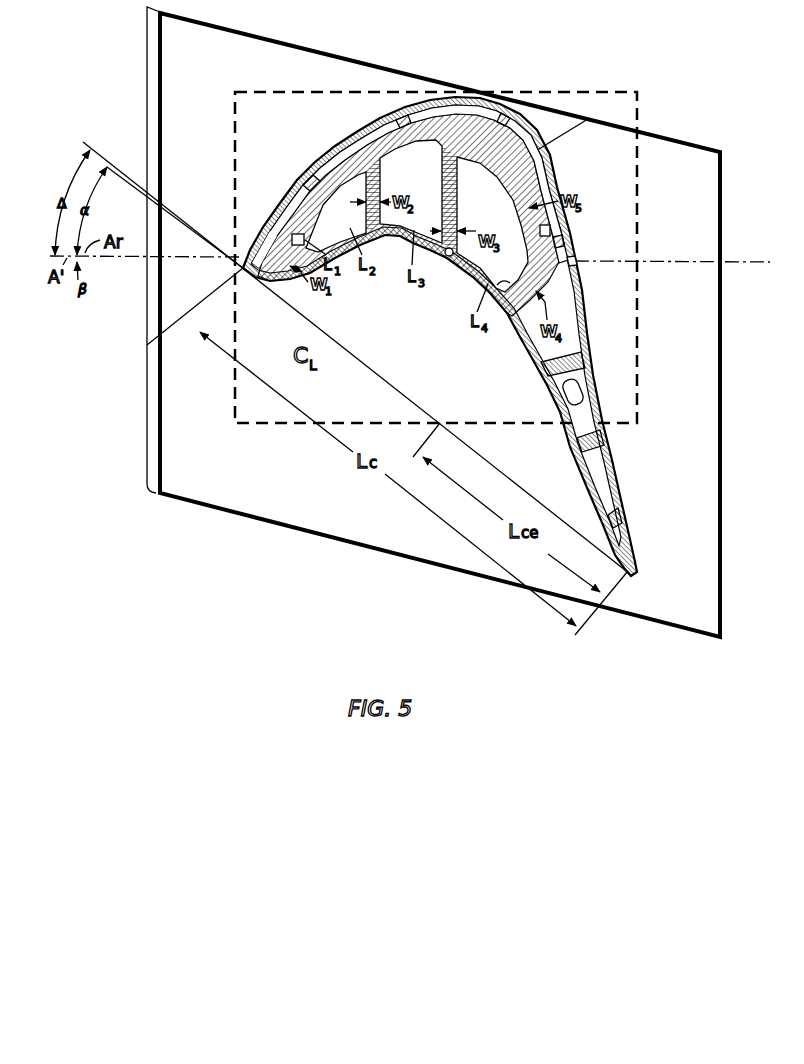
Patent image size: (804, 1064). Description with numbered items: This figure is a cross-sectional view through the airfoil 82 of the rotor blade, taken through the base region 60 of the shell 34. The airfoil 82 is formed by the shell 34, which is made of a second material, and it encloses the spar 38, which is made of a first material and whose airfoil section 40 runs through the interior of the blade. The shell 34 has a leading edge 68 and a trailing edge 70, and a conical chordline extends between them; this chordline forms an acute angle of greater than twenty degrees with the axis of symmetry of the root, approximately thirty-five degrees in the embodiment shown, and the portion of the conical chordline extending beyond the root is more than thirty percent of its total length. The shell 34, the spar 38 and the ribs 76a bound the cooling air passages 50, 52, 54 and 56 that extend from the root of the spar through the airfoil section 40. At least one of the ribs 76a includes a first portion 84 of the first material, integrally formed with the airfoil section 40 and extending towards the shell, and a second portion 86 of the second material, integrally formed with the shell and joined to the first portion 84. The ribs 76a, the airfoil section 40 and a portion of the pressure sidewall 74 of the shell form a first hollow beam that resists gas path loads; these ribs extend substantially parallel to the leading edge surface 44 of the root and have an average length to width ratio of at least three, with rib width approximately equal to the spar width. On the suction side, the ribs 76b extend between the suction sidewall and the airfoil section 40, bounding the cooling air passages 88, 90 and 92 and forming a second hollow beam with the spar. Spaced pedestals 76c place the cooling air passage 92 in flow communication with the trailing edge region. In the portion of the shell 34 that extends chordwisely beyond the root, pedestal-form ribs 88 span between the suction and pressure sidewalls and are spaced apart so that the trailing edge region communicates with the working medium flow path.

The shell 34 is at (461, 336).
The spar 38 is at (512, 197).
The airfoil section 40 is at (520, 157).
The leading edge surface 44 is at (233, 397).
The cooling air passage 50 is at (502, 270).
The cooling air passage 52 is at (413, 173).
The cooling air passage 54 is at (340, 215).
The cooling air passage 56 is at (262, 250).
The base region 60 is at (622, 508).
The leading edge 68 is at (244, 273).
The trailing edge 70 is at (636, 574).
The pressure sidewall 74 is at (540, 355).
The ribs 76a is at (503, 343).
The ribs 76b is at (410, 112).
The pedestals 76c is at (576, 255).
The airfoil 82 is at (433, 322).
The first portion 84 is at (451, 162).
The second portion 86 is at (450, 200).
The ribs 88 is at (357, 146).
The cooling air passage 90 is at (458, 127).
The cooling air passage 92 is at (550, 231).